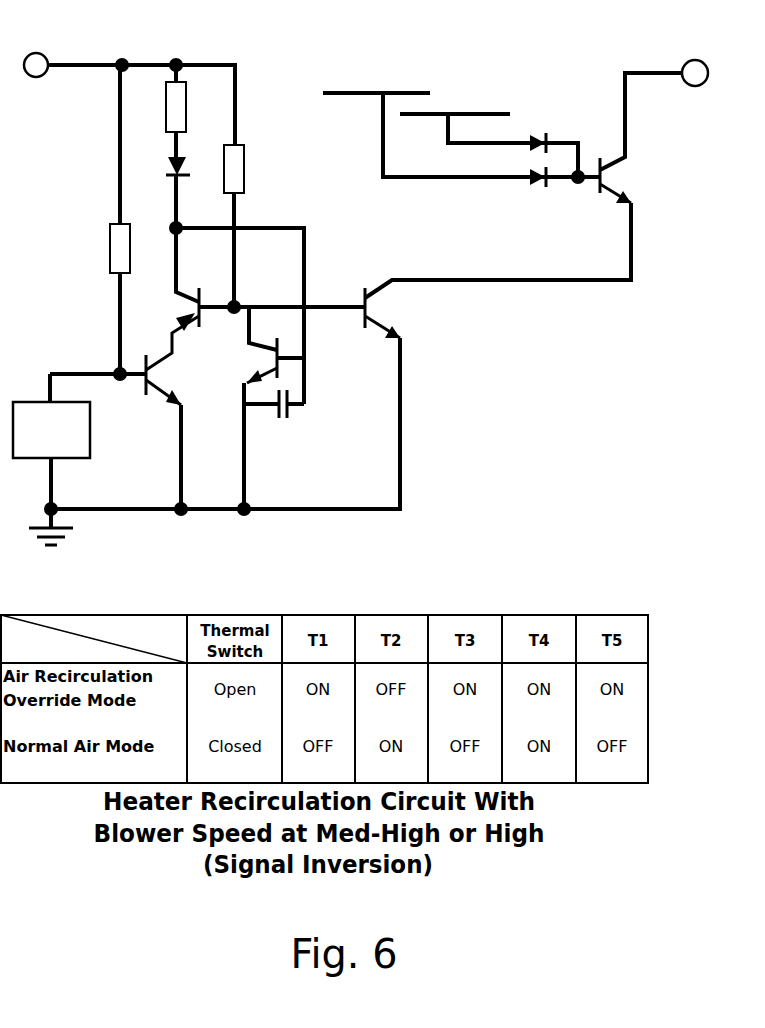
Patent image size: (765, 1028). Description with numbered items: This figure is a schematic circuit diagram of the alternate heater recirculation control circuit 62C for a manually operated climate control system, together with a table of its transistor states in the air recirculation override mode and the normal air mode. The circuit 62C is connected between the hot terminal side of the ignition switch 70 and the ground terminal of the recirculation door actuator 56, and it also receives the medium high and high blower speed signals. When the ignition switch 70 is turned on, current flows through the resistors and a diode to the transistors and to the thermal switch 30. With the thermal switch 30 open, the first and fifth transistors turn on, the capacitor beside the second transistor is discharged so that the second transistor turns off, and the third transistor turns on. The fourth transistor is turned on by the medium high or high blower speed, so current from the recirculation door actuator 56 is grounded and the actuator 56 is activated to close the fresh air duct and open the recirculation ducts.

The ignition switch 70 is at (48, 53).
The thermal switch 30 is at (90, 440).
The recirculation door actuator 56 is at (688, 61).
The heater recirculation control circuit 62C is at (512, 370).